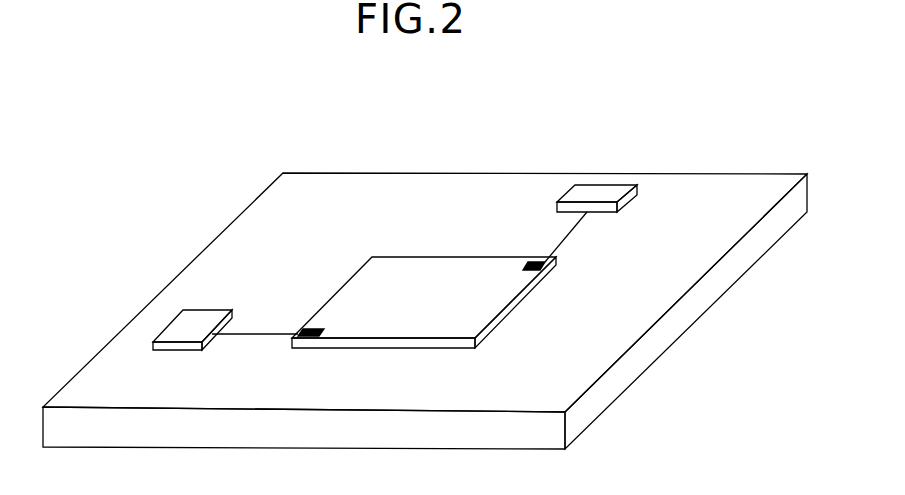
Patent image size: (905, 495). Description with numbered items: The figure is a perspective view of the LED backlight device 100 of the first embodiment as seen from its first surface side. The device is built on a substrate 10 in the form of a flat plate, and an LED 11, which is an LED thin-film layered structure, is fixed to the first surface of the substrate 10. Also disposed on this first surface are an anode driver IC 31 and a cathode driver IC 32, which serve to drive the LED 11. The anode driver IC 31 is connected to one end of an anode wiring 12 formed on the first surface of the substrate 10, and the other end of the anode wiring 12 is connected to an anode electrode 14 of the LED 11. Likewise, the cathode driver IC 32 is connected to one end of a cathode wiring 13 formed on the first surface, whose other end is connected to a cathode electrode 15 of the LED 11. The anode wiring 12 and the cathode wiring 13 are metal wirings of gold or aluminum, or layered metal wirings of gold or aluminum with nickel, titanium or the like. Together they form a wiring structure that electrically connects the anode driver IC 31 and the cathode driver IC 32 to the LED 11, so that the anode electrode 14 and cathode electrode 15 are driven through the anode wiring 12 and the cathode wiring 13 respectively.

The substrate 10 is at (585, 415).
The LED 11 is at (478, 309).
The anode wiring 12 is at (570, 237).
The cathode wiring 13 is at (260, 334).
The anode electrode 14 is at (525, 263).
The cathode electrode 15 is at (316, 340).
The anode driver IC 31 is at (602, 193).
The cathode driver IC 32 is at (160, 332).
The LED backlight device 100 is at (685, 138).